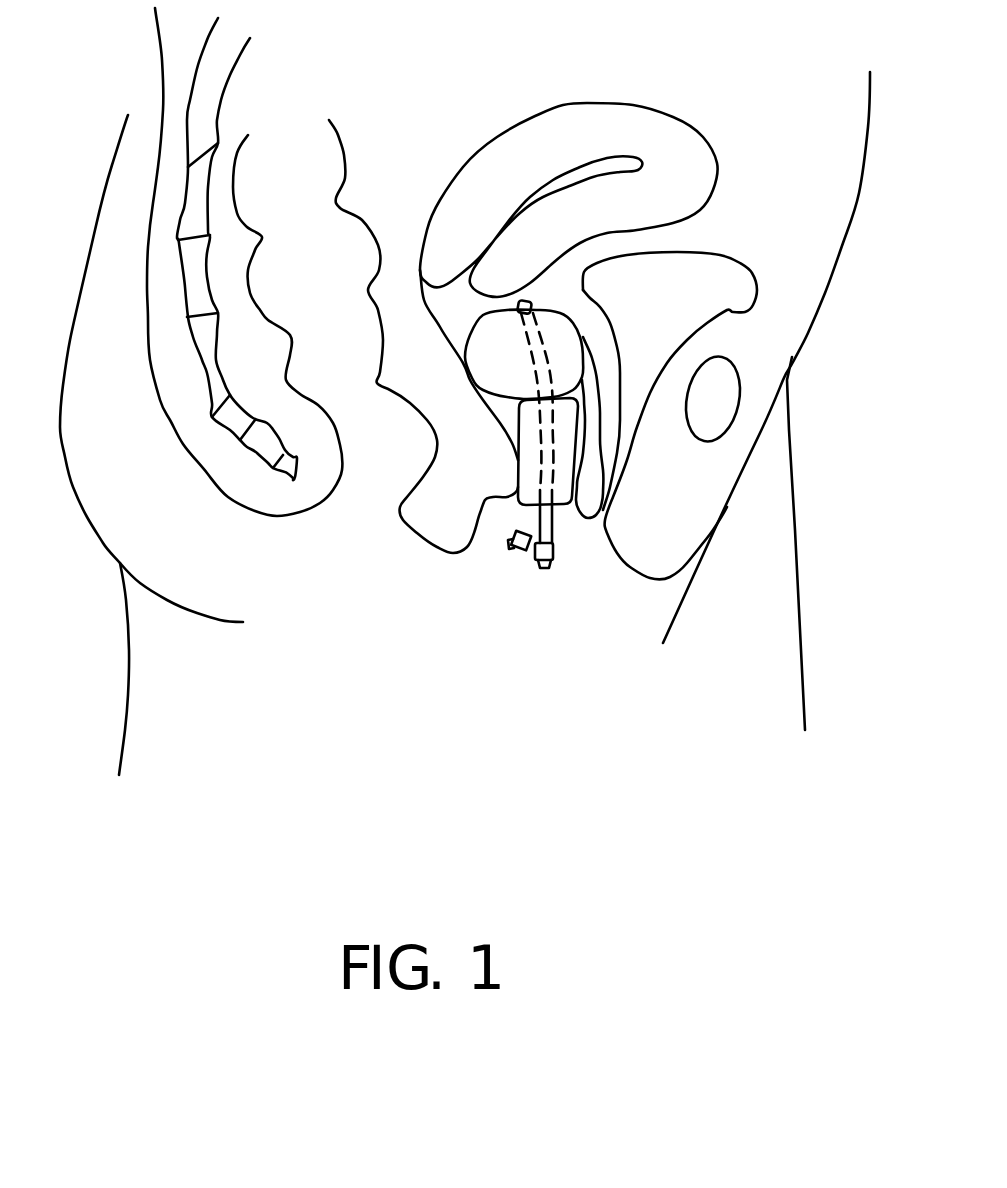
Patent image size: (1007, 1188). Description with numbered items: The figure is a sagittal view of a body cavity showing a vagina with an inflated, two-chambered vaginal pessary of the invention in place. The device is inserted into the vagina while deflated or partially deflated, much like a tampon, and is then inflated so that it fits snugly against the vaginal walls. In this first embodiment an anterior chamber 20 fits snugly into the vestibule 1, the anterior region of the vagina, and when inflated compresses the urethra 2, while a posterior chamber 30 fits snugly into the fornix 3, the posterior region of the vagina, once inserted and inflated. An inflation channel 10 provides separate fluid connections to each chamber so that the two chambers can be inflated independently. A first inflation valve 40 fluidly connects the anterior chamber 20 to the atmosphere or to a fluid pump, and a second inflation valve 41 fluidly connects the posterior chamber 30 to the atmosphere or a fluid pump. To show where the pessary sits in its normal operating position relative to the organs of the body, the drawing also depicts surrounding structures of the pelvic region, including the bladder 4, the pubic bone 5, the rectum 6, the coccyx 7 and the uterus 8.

The vestibule 1 is at (603, 510).
The urethra 2 is at (617, 495).
The fornix 3 is at (440, 328).
The posterior chamber 30 is at (463, 365).
The bladder 4 is at (753, 274).
The pubic bone 5 is at (740, 379).
The rectum 6 is at (335, 487).
The coccyx 7 is at (185, 257).
The uterus 8 is at (563, 103).
The inflation channel 10 is at (542, 472).
The anterior chamber 20 is at (503, 460).
The first inflation valve 40 is at (549, 570).
The second inflation valve 41 is at (523, 553).